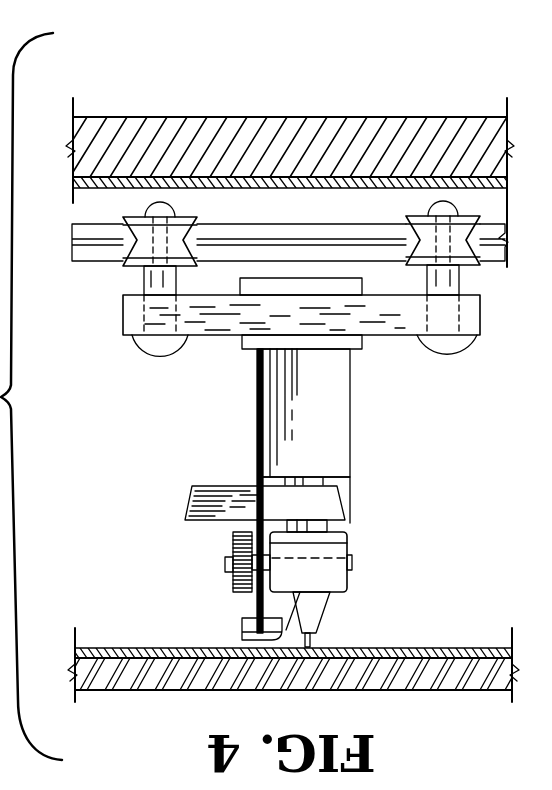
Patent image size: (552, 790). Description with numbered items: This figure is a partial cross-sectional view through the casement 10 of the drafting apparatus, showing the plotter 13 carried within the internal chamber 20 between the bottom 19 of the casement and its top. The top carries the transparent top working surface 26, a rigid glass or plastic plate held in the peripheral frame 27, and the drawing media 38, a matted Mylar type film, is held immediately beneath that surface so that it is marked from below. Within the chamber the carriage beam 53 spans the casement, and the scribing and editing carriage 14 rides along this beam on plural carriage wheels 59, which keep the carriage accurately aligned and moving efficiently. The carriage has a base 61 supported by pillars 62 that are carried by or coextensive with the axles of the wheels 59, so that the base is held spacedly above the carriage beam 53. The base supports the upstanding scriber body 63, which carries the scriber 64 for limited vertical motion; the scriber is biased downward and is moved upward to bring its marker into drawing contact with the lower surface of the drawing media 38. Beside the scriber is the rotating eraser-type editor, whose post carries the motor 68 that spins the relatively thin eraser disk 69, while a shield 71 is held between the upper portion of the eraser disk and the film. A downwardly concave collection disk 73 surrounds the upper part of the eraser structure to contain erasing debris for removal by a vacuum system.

The casement 10 is at (290, 173).
The bottom 19 is at (291, 131).
The carriage beam 53 is at (269, 230).
The carriage wheels 59 is at (333, 249).
The plotter 13 is at (286, 249).
The base 61 is at (273, 315).
The pillars 62 is at (311, 360).
The scribing and editing carriage 14 is at (336, 328).
The internal chamber 20 is at (226, 498).
The peripheral frame 27 is at (332, 436).
The collection disk 73 is at (236, 503).
The eraser disk 69 is at (220, 491).
The scriber body 63 is at (312, 556).
The motor 68 is at (335, 567).
The shield 71 is at (233, 628).
The scriber 64 is at (333, 619).
The drawing media 38 is at (295, 631).
The top working surface 26 is at (303, 678).